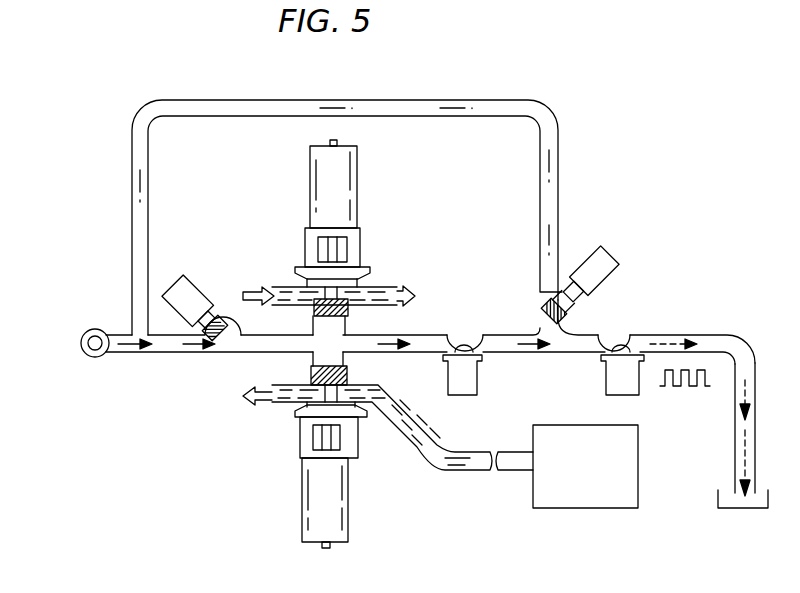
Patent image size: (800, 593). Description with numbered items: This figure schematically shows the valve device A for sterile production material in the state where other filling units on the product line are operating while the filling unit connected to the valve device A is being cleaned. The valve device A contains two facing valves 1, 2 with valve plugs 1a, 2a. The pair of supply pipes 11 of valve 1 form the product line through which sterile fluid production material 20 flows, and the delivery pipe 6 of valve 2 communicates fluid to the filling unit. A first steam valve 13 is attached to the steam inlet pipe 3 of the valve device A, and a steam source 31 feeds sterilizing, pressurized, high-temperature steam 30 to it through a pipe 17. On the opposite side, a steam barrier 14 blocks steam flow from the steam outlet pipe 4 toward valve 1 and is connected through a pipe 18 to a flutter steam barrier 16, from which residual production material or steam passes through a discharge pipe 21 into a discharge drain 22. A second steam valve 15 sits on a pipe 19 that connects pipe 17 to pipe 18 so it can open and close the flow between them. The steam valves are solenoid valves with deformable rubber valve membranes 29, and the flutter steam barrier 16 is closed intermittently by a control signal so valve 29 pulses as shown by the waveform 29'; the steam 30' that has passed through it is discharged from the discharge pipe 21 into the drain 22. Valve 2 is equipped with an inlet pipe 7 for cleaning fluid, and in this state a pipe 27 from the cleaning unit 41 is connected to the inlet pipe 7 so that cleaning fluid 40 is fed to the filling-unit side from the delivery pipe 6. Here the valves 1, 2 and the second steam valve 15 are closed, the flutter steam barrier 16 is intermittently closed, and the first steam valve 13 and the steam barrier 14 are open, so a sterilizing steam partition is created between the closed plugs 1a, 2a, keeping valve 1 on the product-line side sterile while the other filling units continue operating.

The valve 1 is at (368, 190).
The valve plug 1a is at (350, 318).
The valve 2 is at (297, 486).
The valve plug 2a is at (310, 376).
The steam inlet pipe 3 is at (292, 335).
The steam outlet pipe 4 is at (396, 353).
The delivery pipe 6 is at (290, 406).
The inlet pipe 7 is at (360, 392).
The supply pipes 11 is at (283, 287).
The first steam valve 13 is at (166, 290).
The steam barrier 14 is at (463, 396).
The second steam valve 15 is at (610, 286).
The flutter steam barrier 16 is at (630, 396).
The pipe 17 is at (197, 354).
The pipe 18 is at (540, 356).
The pipe 19 is at (398, 100).
The sterile fluid production material 20 is at (248, 292).
The discharge pipe 21 is at (757, 400).
The discharge drain 22 is at (718, 508).
The pipe 27 is at (424, 471).
The valve membrane 29 is at (538, 362).
The waveform 29' is at (691, 397).
The sterilizing steam 30 is at (121, 366).
The steam 30' is at (692, 333).
The steam source 31 is at (80, 342).
The cleaning fluid 40 is at (265, 403).
The cleaning unit 41 is at (558, 509).
The valve device A is at (298, 242).